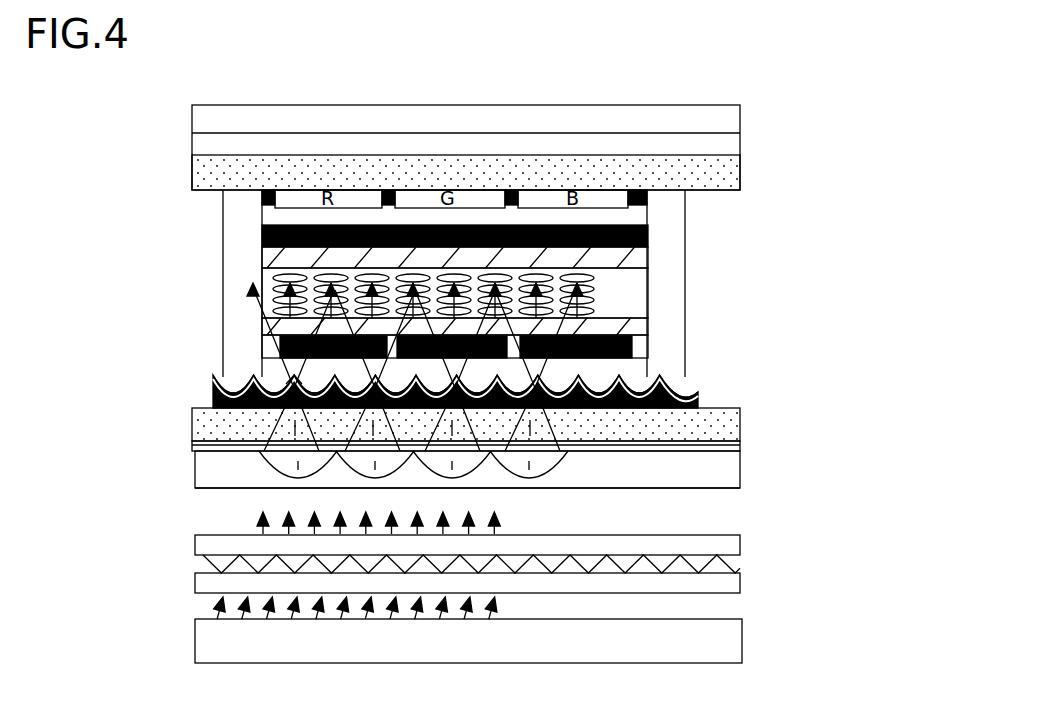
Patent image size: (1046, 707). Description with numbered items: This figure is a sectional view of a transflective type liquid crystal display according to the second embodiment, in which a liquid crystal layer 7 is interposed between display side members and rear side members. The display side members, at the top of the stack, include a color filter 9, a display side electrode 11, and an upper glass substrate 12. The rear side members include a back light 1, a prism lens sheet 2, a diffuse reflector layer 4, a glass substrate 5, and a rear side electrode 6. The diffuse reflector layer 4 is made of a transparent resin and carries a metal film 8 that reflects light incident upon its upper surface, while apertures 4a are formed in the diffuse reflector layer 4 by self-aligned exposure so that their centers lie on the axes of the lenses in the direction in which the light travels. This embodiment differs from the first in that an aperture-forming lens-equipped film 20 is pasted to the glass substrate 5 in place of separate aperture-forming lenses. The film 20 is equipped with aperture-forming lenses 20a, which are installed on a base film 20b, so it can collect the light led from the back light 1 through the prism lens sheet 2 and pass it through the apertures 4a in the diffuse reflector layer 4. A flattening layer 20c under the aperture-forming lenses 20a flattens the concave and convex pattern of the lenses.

The back light 1 is at (715, 637).
The prism lens sheet 2 is at (730, 583).
The diffuse reflector layer 4 is at (490, 349).
The apertures 4a is at (292, 386).
The glass substrate 5 is at (202, 427).
The rear side electrode 6 is at (632, 345).
The liquid crystal layer 7 is at (618, 290).
The metal film 8 is at (675, 387).
The color filter 9 is at (267, 200).
The display side electrode 11 is at (650, 233).
The upper glass substrate 12 is at (197, 165).
The aperture-forming lens-equipped film 20 is at (468, 504).
The aperture-forming lenses 20a is at (275, 462).
The base film 20b is at (733, 441).
The flattening layer 20c is at (643, 473).